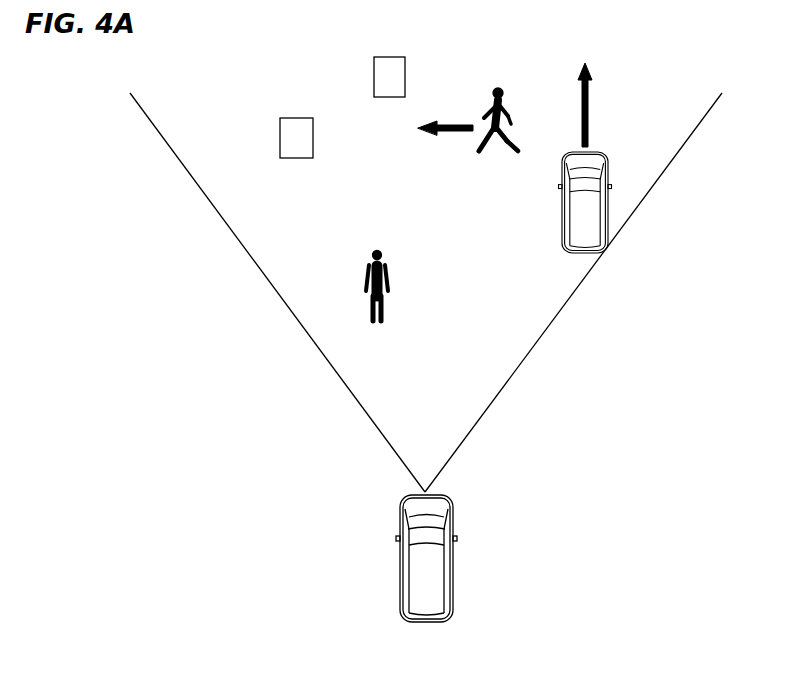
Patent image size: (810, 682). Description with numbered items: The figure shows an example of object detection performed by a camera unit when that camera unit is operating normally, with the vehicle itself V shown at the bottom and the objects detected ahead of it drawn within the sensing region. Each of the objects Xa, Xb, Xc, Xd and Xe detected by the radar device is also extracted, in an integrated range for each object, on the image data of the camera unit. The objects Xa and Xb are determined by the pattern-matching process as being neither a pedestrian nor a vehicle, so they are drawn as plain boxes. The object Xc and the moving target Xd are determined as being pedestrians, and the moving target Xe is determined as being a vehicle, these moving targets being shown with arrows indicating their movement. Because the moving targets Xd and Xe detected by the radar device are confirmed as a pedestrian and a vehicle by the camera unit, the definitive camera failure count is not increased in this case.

The object Xa is at (386, 74).
The object Xb is at (292, 136).
The object Xc is at (368, 310).
The moving target Xd is at (497, 87).
The moving target Xe is at (608, 180).
The vehicle itself V is at (450, 568).